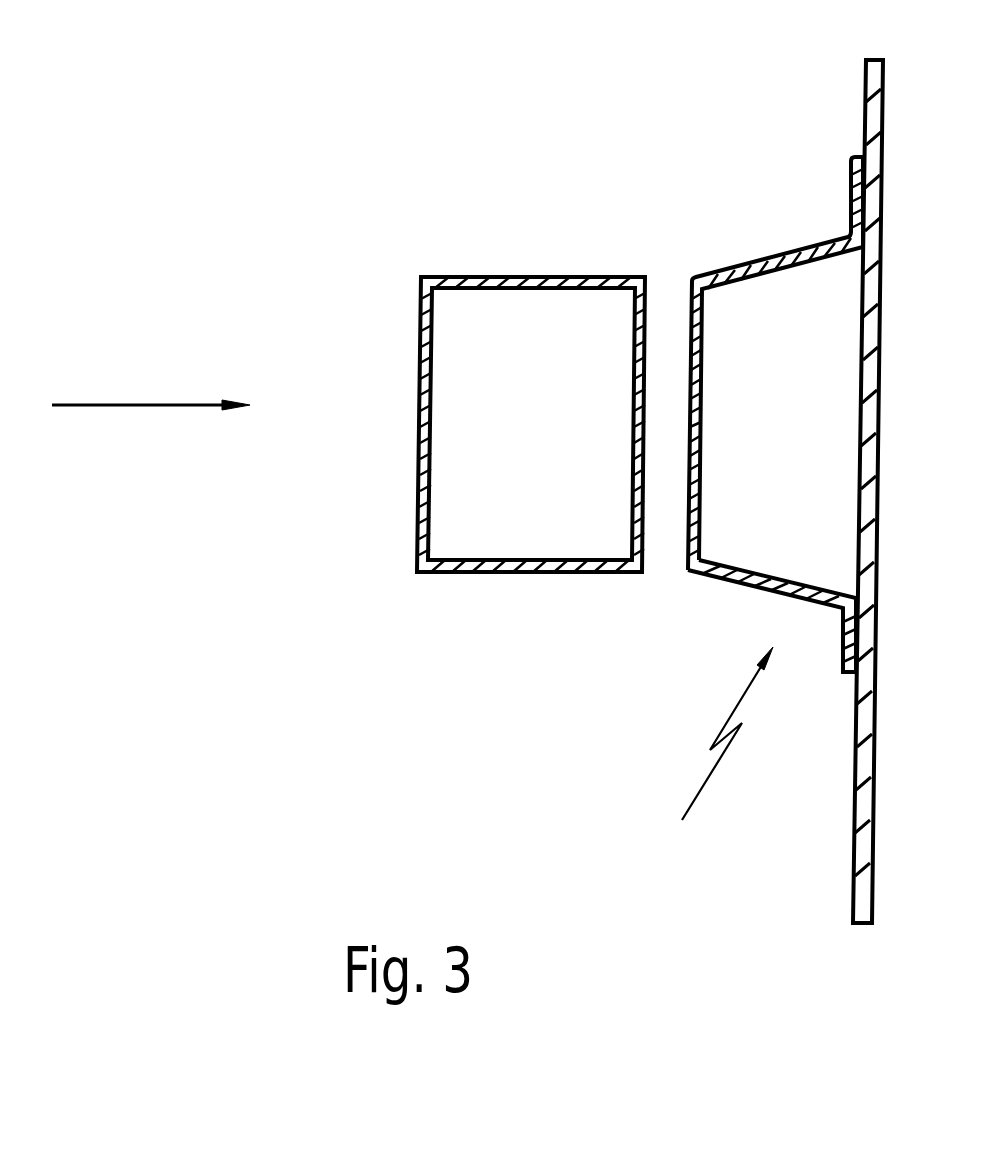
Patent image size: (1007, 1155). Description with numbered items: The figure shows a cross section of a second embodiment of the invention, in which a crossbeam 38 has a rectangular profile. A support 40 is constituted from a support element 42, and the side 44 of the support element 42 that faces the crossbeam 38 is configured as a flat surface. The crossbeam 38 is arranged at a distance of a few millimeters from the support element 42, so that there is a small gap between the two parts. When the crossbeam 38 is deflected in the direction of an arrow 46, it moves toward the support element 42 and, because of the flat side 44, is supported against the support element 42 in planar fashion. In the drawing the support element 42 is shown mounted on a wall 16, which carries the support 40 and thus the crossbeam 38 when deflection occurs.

The wall 16 is at (860, 873).
The crossbeam 38 is at (498, 575).
The support 40 is at (721, 756).
The support element 42 is at (703, 578).
The side 44 is at (692, 312).
The arrow 46 is at (110, 404).